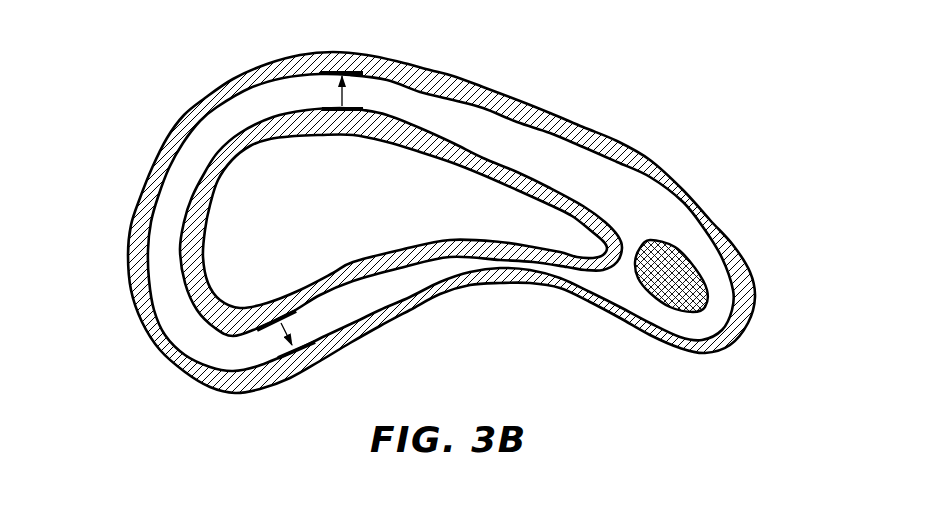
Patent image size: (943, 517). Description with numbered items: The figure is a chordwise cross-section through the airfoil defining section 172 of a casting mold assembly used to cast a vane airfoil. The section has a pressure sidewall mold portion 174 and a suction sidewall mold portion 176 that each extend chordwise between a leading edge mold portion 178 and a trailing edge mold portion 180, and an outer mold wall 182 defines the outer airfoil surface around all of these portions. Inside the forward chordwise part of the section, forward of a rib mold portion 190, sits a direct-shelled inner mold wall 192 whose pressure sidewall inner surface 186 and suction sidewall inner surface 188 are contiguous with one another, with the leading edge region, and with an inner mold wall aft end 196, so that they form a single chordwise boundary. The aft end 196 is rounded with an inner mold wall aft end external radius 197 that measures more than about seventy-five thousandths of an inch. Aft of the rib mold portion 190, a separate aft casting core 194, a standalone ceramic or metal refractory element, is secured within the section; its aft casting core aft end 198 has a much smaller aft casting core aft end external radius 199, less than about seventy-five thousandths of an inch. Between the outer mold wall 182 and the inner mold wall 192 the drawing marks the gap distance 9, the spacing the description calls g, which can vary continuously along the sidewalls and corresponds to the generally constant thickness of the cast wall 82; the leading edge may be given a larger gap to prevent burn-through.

The gap distance 9 is at (345, 91).
The wall 82 is at (553, 277).
The airfoil defining section 172 is at (754, 183).
The pressure sidewall mold portion 174 is at (522, 351).
The suction sidewall mold portion 176 is at (454, 62).
The leading edge mold portion 178 is at (117, 228).
The trailing edge mold portion 180 is at (766, 325).
The outer mold wall 182 is at (262, 72).
The pressure sidewall inner surface 186 is at (401, 222).
The suction sidewall inner surface 188 is at (393, 262).
The rib mold portion 190 is at (633, 242).
The direct-shelled inner mold wall 192 is at (214, 260).
The aft casting core 194 is at (685, 261).
The inner mold wall aft end 196 is at (580, 230).
The inner mold wall aft end external radius 197 is at (611, 232).
The aft casting core aft end 198 is at (720, 285).
The aft casting core aft end external radius 199 is at (710, 308).